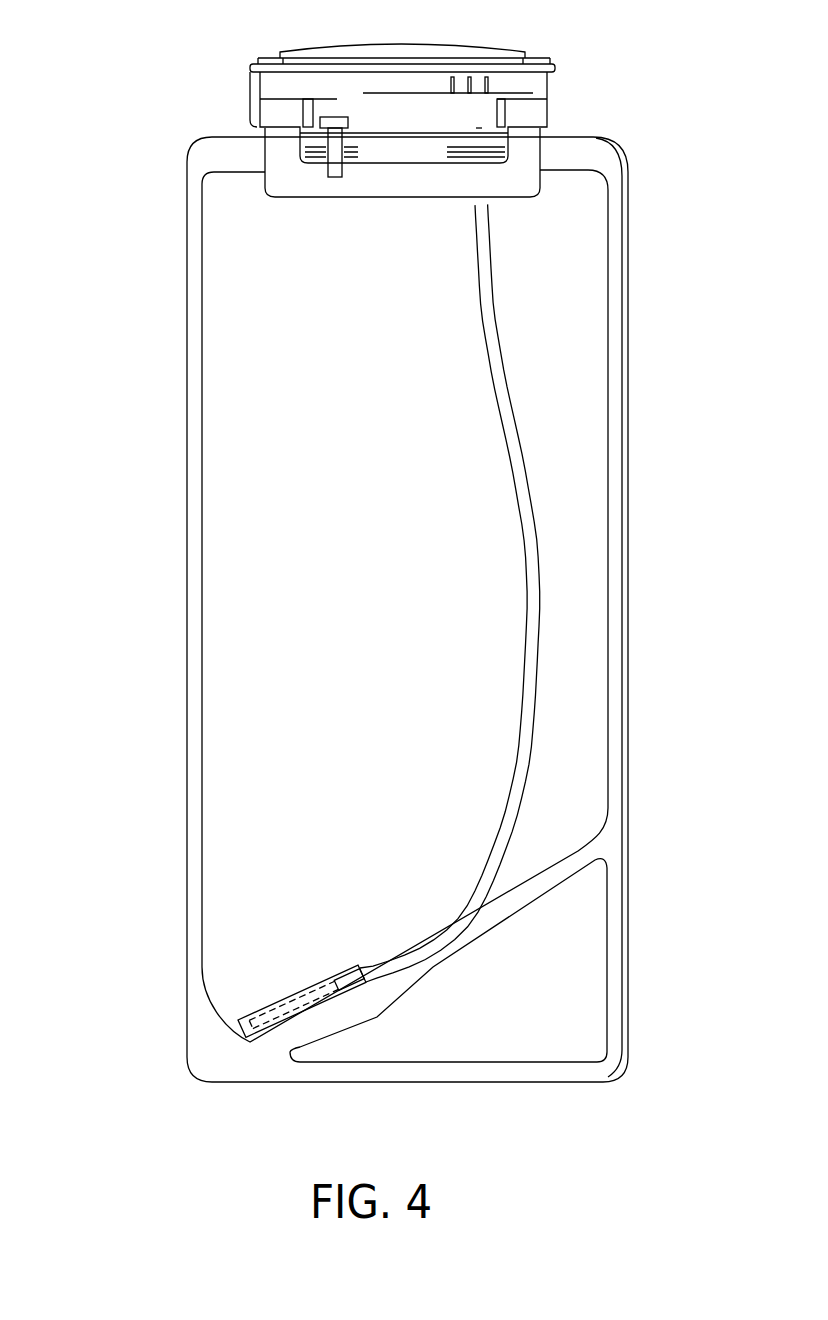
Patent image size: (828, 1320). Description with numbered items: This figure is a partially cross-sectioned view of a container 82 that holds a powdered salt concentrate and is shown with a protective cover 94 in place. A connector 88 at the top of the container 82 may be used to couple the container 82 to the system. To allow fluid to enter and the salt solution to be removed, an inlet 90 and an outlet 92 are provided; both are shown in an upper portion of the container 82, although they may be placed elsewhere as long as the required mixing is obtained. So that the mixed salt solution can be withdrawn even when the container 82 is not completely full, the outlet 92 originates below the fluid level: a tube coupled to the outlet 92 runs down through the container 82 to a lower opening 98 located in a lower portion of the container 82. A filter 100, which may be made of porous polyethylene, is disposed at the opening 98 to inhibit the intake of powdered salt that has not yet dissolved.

The container 82 is at (645, 482).
The connector 88 is at (250, 97).
The inlet 90 is at (320, 128).
The outlet 92 is at (480, 129).
The protective cover 94 is at (283, 57).
The lower opening 98 is at (528, 585).
The filter 100 is at (293, 1002).